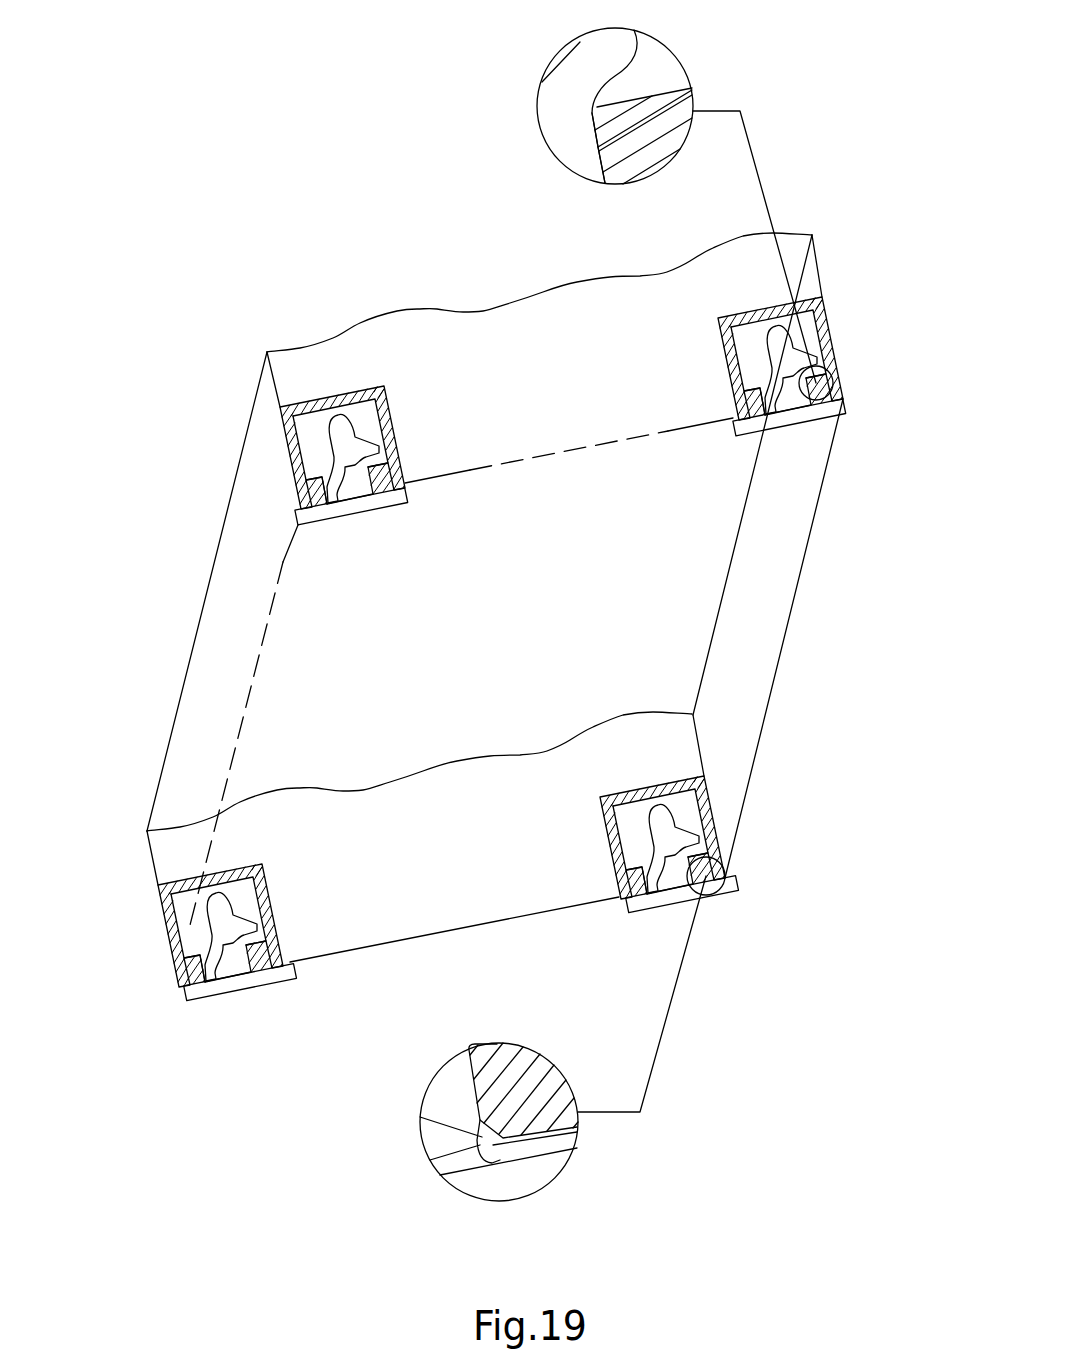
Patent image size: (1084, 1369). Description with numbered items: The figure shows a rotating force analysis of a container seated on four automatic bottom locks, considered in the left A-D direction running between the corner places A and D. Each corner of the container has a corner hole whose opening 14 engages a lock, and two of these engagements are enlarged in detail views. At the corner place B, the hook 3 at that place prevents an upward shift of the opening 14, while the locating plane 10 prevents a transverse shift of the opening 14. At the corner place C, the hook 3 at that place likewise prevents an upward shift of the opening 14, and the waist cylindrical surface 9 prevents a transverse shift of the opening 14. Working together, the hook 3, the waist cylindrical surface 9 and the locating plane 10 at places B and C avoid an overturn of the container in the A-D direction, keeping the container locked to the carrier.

The hook 3 is at (607, 58).
The waist cylindrical surface 9 is at (598, 143).
The locating plane 10 is at (480, 1145).
The opening 14 is at (690, 88).
The A place A is at (153, 982).
The B place B is at (753, 862).
The C place C is at (858, 337).
The D place D is at (272, 437).